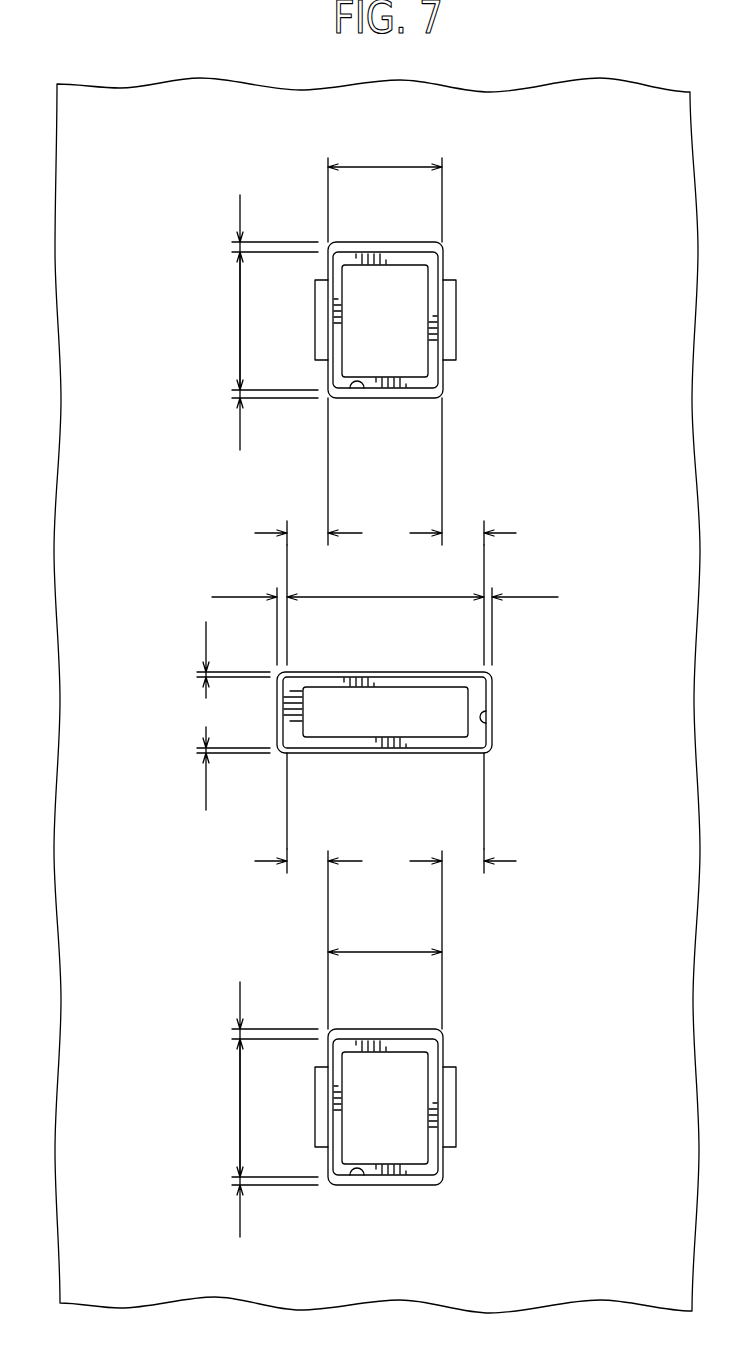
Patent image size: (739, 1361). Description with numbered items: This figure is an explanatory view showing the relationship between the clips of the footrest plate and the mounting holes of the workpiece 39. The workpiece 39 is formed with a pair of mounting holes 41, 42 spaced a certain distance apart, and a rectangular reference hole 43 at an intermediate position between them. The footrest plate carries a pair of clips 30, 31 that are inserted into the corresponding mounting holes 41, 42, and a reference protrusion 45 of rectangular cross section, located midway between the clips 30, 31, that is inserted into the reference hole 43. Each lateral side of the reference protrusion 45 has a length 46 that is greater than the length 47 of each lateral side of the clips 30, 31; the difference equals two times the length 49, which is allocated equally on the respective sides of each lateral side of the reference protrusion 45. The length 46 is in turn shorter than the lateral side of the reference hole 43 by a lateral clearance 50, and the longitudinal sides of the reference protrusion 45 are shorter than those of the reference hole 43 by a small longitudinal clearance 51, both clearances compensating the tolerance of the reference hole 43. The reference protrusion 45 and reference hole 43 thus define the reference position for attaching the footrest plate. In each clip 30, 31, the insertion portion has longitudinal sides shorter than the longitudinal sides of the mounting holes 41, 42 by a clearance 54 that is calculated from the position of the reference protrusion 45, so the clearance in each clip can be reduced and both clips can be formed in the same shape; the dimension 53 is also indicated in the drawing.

The clip 30 is at (456, 1054).
The clip 31 is at (456, 265).
The workpiece 39 is at (618, 183).
The mounting hole 41 is at (356, 1177).
The mounting hole 42 is at (356, 390).
The reference hole 43 is at (486, 723).
The reference protrusion 45 is at (407, 682).
The length of lateral side of reference protrusion 46 is at (385, 697).
The length of lateral side of clip 47 is at (385, 582).
The length 49 is at (385, 686).
The lateral clearance 50 is at (385, 615).
The longitudinal clearance 51 is at (221, 716).
The height of connector opening 53 is at (223, 714).
The clearance 54 is at (260, 716).